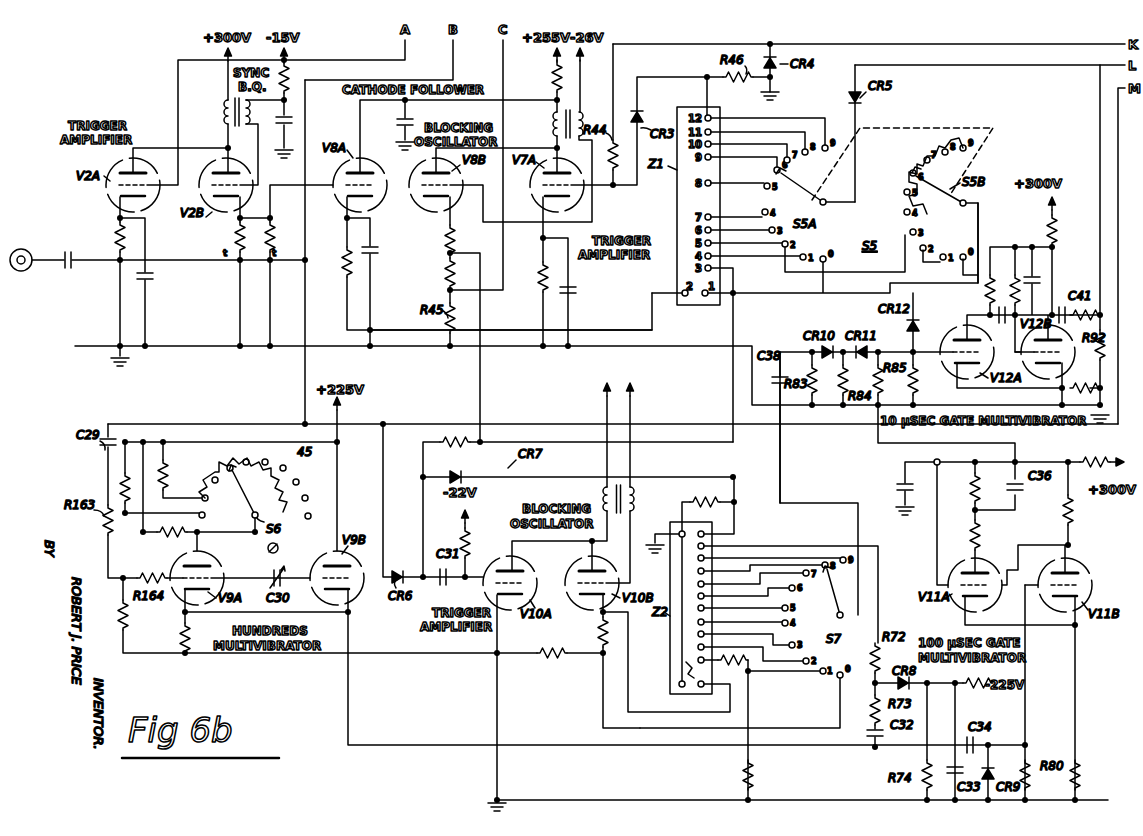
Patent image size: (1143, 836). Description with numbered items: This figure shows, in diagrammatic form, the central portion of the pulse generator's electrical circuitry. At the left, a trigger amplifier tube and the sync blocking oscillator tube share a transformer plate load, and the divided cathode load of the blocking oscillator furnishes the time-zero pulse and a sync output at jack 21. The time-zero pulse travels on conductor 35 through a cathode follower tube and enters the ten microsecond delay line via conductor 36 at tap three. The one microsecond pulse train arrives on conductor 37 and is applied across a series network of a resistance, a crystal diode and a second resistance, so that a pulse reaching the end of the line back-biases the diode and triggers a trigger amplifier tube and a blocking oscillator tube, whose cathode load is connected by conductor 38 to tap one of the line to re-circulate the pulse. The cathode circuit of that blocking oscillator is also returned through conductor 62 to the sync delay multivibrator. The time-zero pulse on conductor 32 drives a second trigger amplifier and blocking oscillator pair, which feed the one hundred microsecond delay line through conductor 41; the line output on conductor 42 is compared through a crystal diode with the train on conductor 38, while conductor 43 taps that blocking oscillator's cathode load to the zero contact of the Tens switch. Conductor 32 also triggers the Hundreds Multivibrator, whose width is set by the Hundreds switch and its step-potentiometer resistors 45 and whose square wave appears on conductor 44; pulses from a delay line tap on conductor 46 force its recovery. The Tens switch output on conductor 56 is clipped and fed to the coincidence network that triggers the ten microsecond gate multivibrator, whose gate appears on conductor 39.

The jack 21 is at (26, 253).
The conductor 32 is at (307, 241).
The conductor 35 is at (294, 186).
The conductor 36 is at (380, 331).
The conductor 37 is at (1046, 36).
The conductor 38 is at (482, 324).
The conductor 39 is at (1100, 90).
The conductor 41 is at (630, 678).
The conductor 42 is at (662, 480).
The conductor 43 is at (760, 726).
The conductor 44 is at (348, 648).
The resistors 45 is at (288, 464).
The conductor 46 is at (767, 552).
The conductor 56 is at (780, 471).
The conductor 62 is at (508, 80).